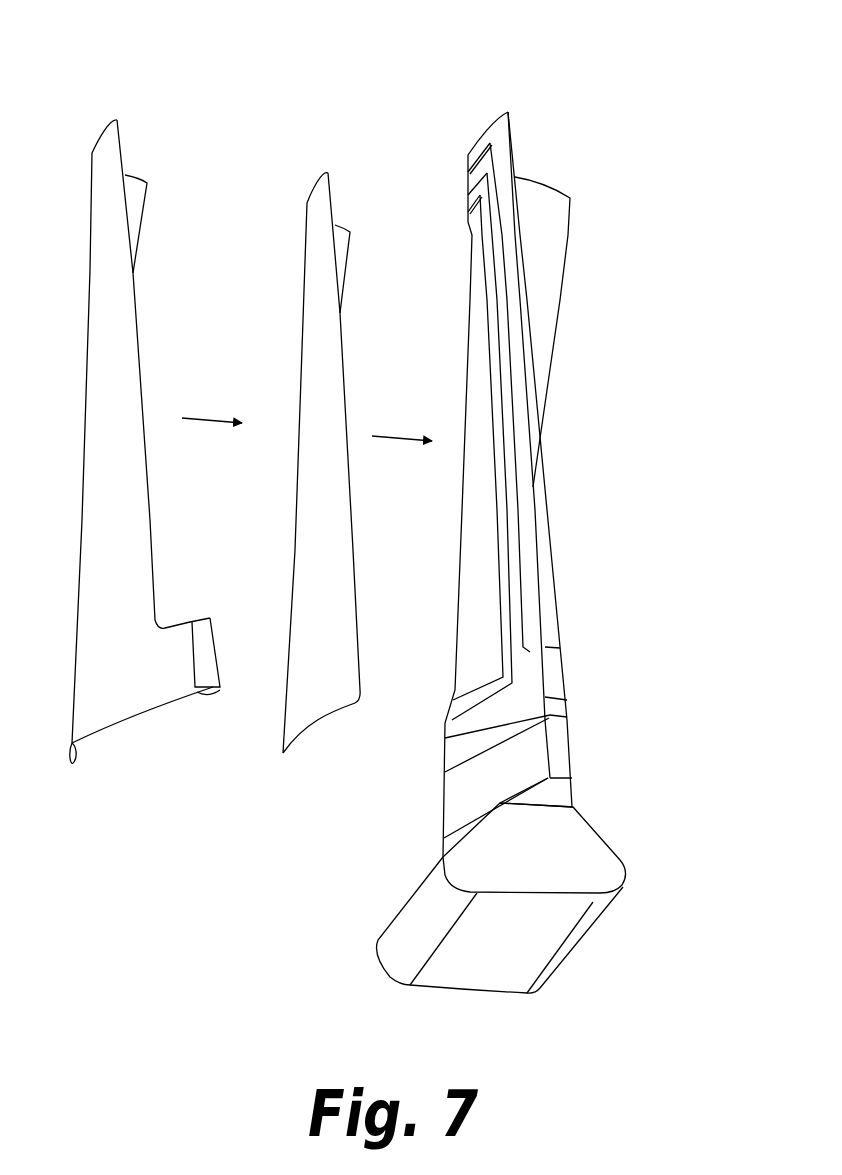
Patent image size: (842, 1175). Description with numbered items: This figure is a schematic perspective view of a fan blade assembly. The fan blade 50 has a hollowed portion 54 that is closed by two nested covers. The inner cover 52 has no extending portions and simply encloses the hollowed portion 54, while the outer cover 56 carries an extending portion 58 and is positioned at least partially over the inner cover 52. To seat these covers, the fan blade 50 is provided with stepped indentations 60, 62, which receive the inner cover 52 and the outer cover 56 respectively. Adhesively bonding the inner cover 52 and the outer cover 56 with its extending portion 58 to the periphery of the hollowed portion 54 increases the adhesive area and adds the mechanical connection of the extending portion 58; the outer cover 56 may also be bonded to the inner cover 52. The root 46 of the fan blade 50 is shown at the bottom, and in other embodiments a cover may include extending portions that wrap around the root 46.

The root 46 is at (585, 867).
The fan blade 50 is at (557, 190).
The inner cover 52 is at (318, 173).
The hollowed portion 54 is at (475, 597).
The outer cover 56 is at (108, 120).
The extending portion 58 is at (220, 688).
The stepped indentation 60 is at (512, 683).
The stepped indentation 62 is at (567, 696).